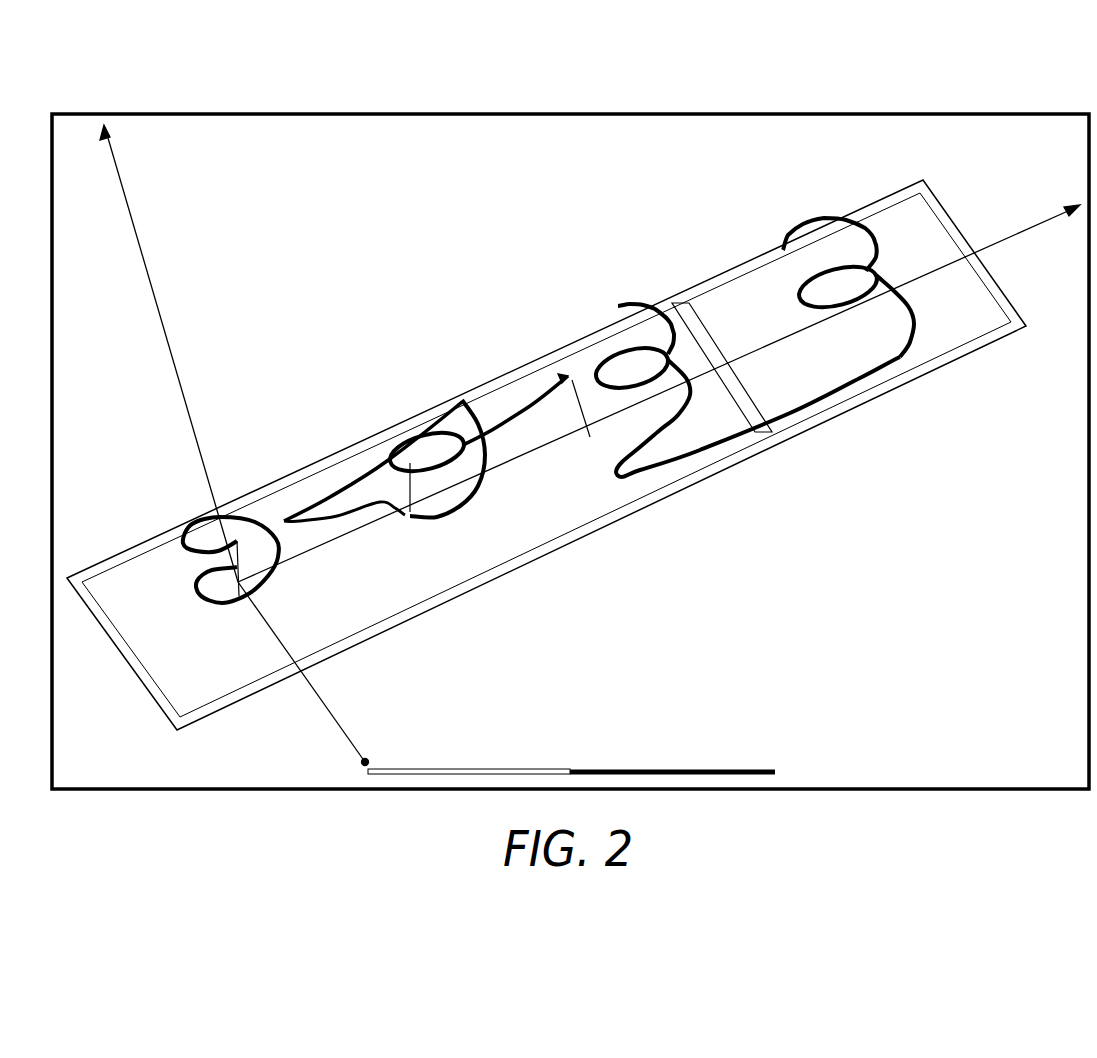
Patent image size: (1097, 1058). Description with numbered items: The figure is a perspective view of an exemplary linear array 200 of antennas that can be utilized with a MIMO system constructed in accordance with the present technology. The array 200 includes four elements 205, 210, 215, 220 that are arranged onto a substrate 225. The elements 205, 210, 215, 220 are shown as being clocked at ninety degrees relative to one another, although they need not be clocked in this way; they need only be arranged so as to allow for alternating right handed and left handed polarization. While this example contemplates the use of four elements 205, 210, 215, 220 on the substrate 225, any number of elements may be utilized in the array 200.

The array 200 is at (192, 71).
The element 205 is at (821, 215).
The element 210 is at (623, 302).
The element 215 is at (428, 433).
The element 220 is at (227, 517).
The substrate 225 is at (764, 320).